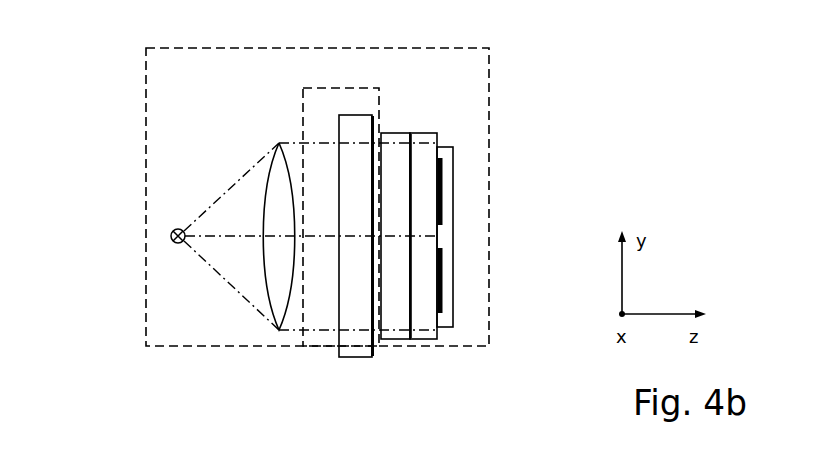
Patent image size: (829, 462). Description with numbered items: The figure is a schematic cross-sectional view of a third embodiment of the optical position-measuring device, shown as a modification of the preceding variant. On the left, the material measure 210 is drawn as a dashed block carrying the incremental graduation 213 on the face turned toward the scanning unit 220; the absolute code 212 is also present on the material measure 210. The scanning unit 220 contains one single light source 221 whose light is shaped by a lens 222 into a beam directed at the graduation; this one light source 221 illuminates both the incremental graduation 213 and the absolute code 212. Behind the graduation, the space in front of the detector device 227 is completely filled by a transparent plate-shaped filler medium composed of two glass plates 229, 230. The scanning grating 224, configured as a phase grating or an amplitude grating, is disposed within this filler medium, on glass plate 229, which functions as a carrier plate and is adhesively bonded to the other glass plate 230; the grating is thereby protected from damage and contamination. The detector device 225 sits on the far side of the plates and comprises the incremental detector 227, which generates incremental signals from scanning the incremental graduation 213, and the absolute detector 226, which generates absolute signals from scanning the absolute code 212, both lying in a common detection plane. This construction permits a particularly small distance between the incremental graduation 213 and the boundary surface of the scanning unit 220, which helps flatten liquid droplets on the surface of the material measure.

The material measure 210 is at (324, 355).
The absolute code 212 is at (372, 313).
The incremental graduation 213 is at (372, 152).
The scanning unit 220 is at (134, 207).
The light source 221 is at (177, 228).
The lens 222 is at (279, 141).
The scanning grating 224 is at (412, 150).
The detector device 225 is at (447, 242).
The absolute detector 226 is at (443, 292).
The incremental detector 227 is at (440, 163).
The glass plate 229 is at (430, 336).
The glass plate 230 is at (397, 333).